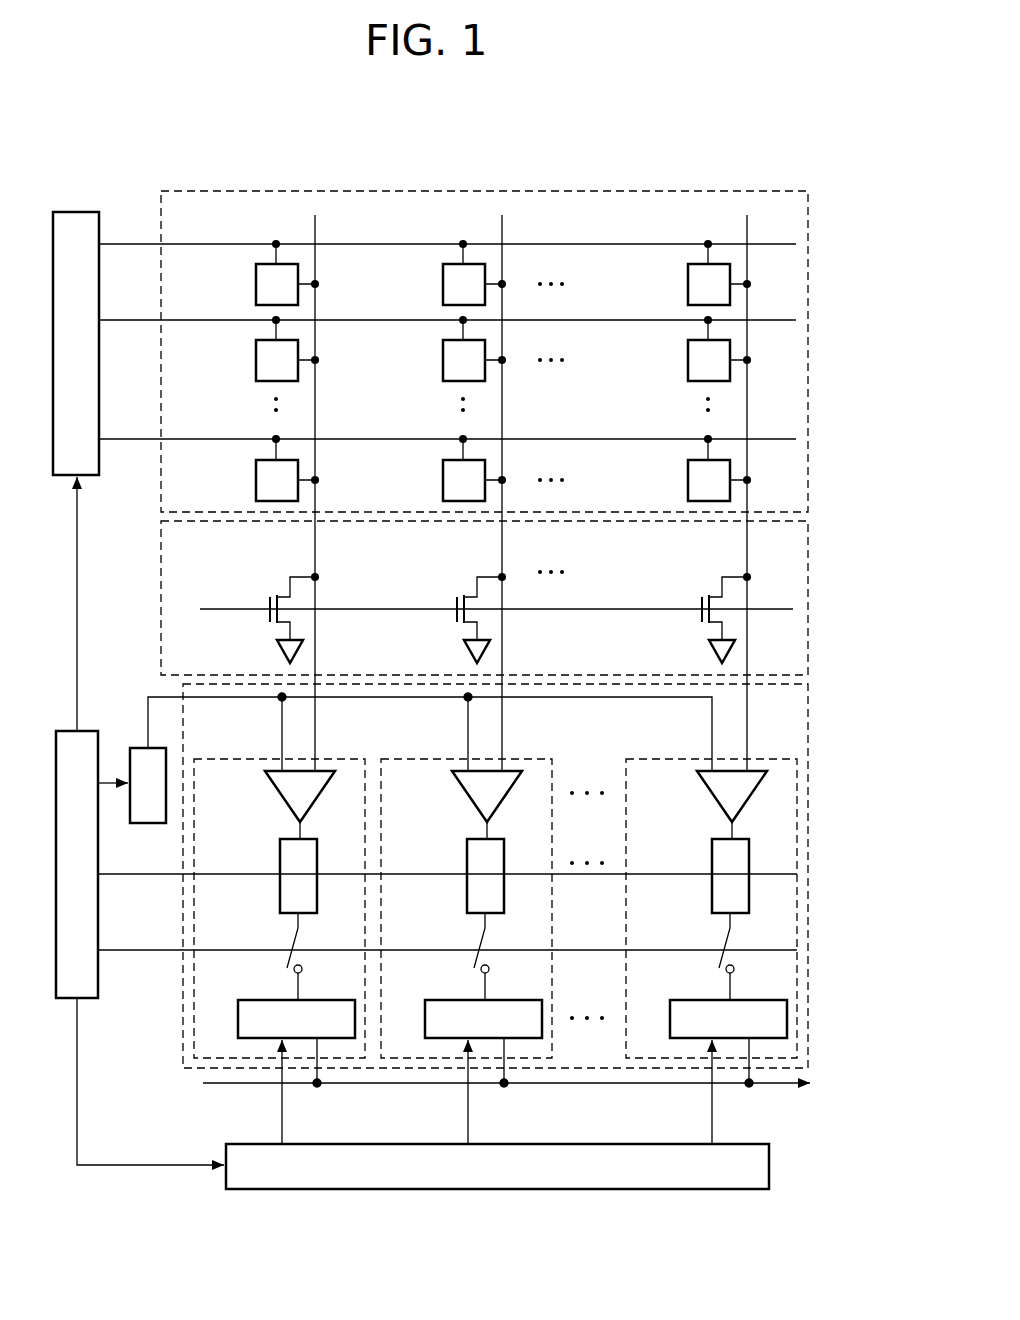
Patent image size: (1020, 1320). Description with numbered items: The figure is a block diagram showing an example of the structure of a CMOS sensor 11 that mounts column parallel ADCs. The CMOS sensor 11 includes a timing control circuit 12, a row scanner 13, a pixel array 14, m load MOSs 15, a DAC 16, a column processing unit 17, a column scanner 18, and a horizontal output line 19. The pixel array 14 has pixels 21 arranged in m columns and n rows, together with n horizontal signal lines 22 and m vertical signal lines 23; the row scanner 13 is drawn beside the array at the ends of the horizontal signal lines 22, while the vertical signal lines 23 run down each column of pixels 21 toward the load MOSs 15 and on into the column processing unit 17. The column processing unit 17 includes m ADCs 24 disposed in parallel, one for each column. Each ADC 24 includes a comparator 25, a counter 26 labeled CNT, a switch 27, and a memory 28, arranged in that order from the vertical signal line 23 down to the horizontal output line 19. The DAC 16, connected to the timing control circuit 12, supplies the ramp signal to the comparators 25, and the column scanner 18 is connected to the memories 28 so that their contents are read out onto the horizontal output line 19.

The CMOS sensor 11 is at (676, 143).
The timing control circuit 12 is at (98, 962).
The row scanner 13 is at (76, 212).
The pixel array 14 is at (409, 190).
The load MOS 15 is at (484, 598).
The DAC 16 is at (148, 823).
The column processing unit 17 is at (183, 1052).
The column scanner 18 is at (769, 1165).
The horizontal output line 19 is at (537, 1086).
The pixel 21 is at (461, 371).
The horizontal signal line 22 is at (129, 246).
The vertical signal line 23 is at (315, 223).
The ADC 24 is at (495, 884).
The comparator 25 is at (493, 805).
The counter 26 is at (484, 883).
The switch 27 is at (467, 956).
The memory 28 is at (515, 998).